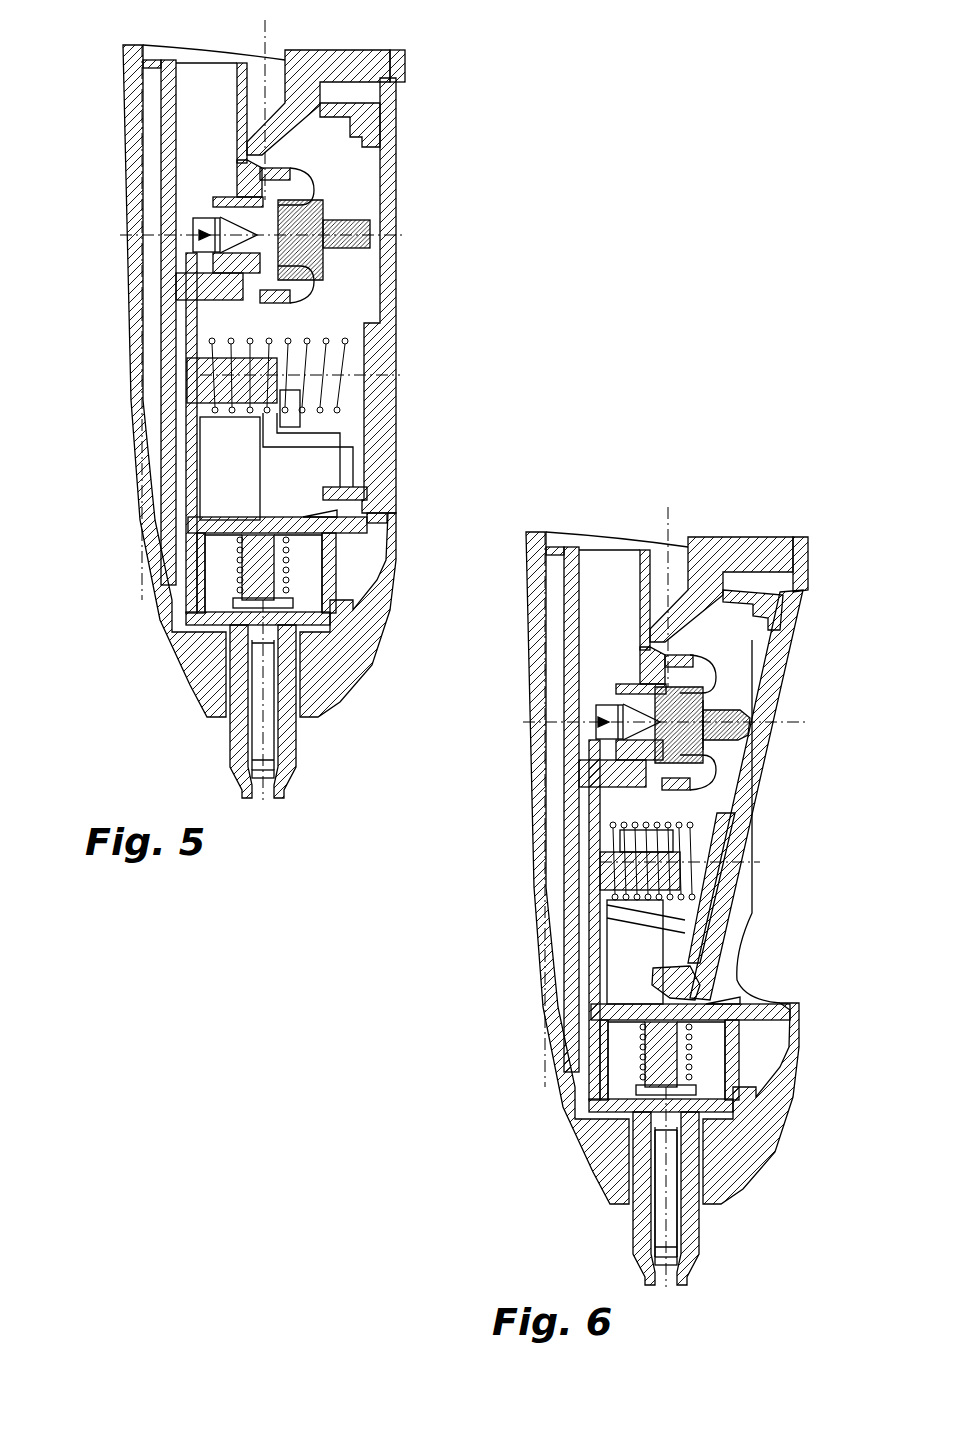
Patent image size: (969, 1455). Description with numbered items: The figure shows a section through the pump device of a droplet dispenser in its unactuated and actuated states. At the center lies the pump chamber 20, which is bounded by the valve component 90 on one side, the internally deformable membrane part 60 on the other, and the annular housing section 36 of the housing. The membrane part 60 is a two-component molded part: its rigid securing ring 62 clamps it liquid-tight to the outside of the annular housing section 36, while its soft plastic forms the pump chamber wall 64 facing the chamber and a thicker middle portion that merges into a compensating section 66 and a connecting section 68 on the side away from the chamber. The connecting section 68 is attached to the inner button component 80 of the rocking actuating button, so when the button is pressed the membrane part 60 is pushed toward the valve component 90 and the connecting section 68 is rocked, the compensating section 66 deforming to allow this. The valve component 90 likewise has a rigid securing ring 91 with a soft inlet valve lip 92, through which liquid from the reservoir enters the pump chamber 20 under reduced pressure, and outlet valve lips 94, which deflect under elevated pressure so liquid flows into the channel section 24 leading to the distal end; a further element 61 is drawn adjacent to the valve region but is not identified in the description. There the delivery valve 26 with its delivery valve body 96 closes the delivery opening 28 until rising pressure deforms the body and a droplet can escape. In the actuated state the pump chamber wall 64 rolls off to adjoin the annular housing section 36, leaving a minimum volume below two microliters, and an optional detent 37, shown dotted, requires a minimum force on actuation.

In FIG. 5, the pump chamber 20 is at (257, 237).
In FIG. 6, the pump chamber 20 is at (660, 724).
In FIG. 6, the channel section 24 is at (600, 990).
In FIG. 6, the delivery valve 26 is at (618, 1112).
In FIG. 6, the delivery opening 28 is at (665, 1278).
In FIG. 6, the annular housing section 36 is at (740, 640).
In FIG. 5, the detent 37 is at (354, 521).
In FIG. 6, the detent 37 is at (690, 1008).
In FIG. 5, the membrane part 60 is at (340, 212).
In FIG. 6, the membrane part 60 is at (679, 725).
In FIG. 5, the spring retainer 61 is at (320, 352).
In FIG. 6, the spring retainer 61 is at (640, 690).
In FIG. 5, the securing ring 62 is at (268, 170).
In FIG. 6, the securing ring 62 is at (668, 660).
In FIG. 5, the pump chamber wall 64 is at (297, 203).
In FIG. 6, the pump chamber wall 64 is at (684, 685).
In FIG. 5, the compensating section 66 is at (330, 344).
In FIG. 6, the compensating section 66 is at (745, 790).
In FIG. 5, the connecting section 68 is at (297, 243).
In FIG. 6, the connecting section 68 is at (733, 734).
In FIG. 5, the inner button component 80 is at (370, 237).
In FIG. 6, the inner button component 80 is at (735, 730).
In FIG. 5, the valve component 90 is at (200, 236).
In FIG. 6, the valve component 90 is at (598, 723).
In FIG. 5, the securing ring 91 is at (265, 273).
In FIG. 6, the securing ring 91 is at (650, 768).
In FIG. 5, the inlet valve lip 92 is at (215, 276).
In FIG. 6, the inlet valve lip 92 is at (660, 790).
In FIG. 6, the outlet valve lip 94 is at (660, 733).
In FIG. 6, the delivery valve body 96 is at (680, 1158).